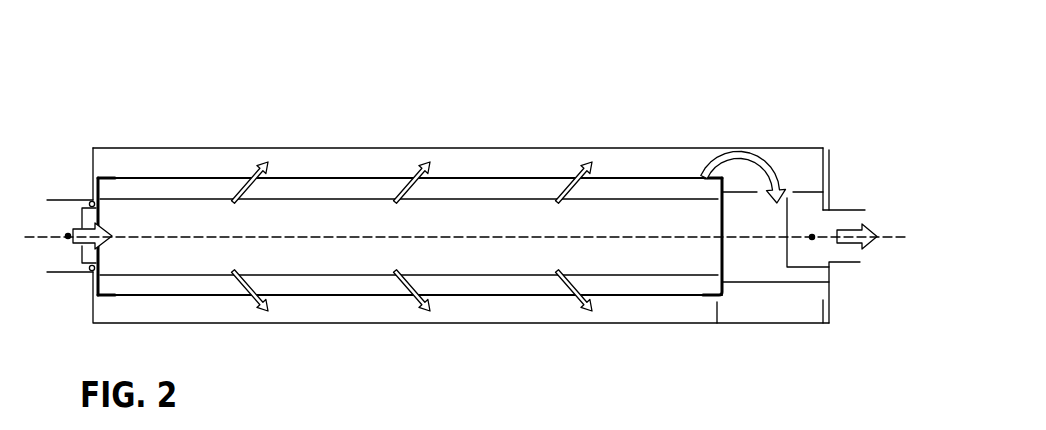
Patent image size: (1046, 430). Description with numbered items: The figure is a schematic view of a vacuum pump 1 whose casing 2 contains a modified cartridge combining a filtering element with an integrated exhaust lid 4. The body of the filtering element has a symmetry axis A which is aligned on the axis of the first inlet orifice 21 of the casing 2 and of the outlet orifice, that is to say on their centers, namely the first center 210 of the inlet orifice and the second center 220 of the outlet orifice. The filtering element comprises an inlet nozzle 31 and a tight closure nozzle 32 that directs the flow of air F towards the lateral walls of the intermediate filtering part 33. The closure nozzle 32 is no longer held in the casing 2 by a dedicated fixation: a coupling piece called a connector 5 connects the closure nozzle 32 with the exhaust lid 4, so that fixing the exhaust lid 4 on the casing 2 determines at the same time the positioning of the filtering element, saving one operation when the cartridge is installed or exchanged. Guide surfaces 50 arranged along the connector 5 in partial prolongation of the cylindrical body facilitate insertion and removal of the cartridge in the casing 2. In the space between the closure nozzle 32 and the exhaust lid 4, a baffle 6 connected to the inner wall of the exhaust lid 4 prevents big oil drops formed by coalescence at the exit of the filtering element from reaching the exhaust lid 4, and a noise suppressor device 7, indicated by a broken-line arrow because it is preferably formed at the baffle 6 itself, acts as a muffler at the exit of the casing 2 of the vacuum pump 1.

The vacuum pump 1 is at (535, 127).
The casing 2 is at (332, 148).
The exhaust lid 4 is at (825, 178).
The connector 5 is at (787, 154).
The baffle 6 is at (862, 263).
The noise suppressor device 7 is at (799, 207).
The first inlet orifice 21 is at (21, 206).
The inlet nozzle 31 is at (97, 292).
The tight closure nozzle 32 is at (718, 255).
The intermediate filtering part 33 is at (363, 283).
The guide surfaces 50 is at (780, 283).
The first center of the first inlet orifice 210 is at (68, 236).
The second center of the second outlet orifice 220 is at (812, 237).
The symmetry axis A is at (461, 237).
The flow of air F is at (860, 260).